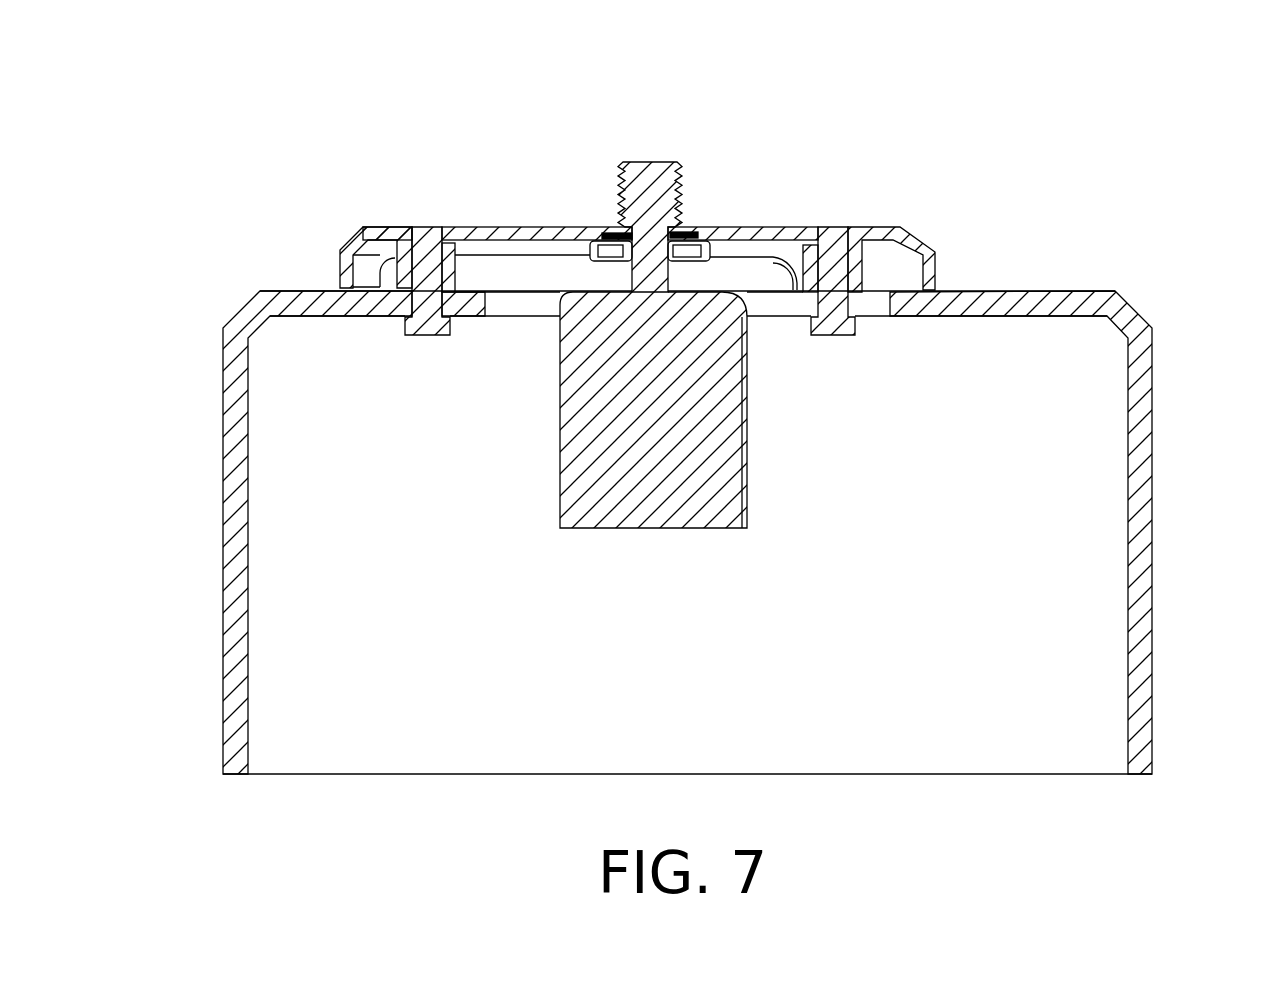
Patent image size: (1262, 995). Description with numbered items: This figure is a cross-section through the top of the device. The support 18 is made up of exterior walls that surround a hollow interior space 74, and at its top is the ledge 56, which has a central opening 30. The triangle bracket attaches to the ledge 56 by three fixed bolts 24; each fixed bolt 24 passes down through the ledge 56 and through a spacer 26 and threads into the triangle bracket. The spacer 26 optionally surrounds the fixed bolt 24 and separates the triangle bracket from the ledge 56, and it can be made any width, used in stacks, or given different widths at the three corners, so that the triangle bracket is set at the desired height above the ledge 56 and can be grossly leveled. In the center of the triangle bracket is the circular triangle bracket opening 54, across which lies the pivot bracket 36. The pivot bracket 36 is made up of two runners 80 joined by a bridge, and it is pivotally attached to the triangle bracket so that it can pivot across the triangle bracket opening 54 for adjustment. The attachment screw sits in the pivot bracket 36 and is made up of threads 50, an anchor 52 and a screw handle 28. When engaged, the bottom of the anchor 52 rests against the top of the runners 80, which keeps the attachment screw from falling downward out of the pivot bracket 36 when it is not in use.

The support 18 is at (684, 487).
The ledge 56 is at (296, 300).
The hollow interior space 74 is at (360, 569).
The screw handle 28 is at (712, 438).
The threads 50 is at (677, 162).
The triangle bracket opening 54 is at (573, 232).
The runners 80 is at (602, 236).
The anchor 52 is at (692, 232).
The pivot bracket 36 is at (717, 230).
The central opening 30 is at (528, 303).
The spacer 26 is at (403, 268).
The fixed bolts 24 is at (432, 239).